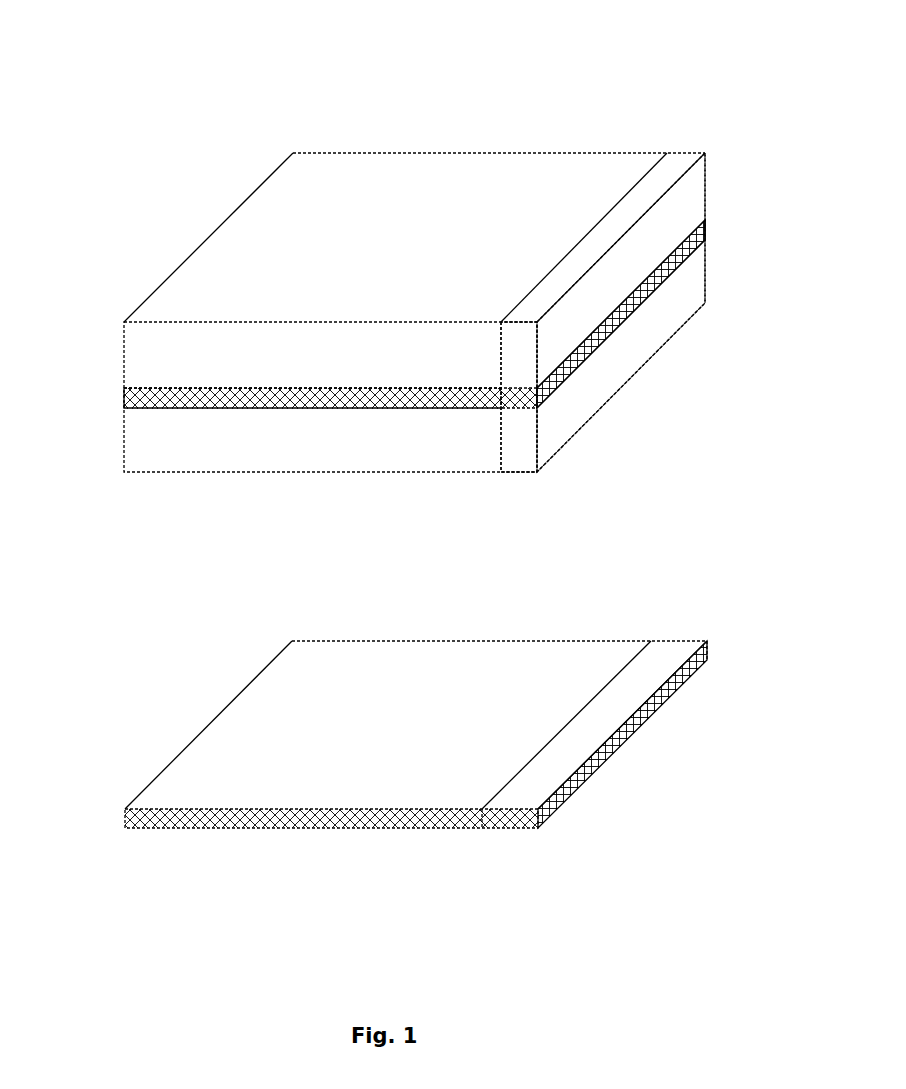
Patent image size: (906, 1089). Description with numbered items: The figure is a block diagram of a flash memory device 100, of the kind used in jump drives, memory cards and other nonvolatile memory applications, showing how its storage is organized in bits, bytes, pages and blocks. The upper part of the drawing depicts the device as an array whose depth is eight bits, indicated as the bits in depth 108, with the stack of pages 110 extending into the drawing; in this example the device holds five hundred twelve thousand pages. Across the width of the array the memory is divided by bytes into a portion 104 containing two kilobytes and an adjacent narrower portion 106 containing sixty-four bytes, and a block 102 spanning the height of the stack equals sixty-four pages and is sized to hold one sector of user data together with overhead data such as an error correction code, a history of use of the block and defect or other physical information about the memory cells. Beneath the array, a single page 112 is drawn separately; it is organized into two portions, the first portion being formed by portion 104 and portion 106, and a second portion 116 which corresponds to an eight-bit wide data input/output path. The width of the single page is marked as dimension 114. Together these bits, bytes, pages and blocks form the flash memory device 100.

The flash memory device 100 is at (422, 294).
The block 102 is at (106, 322).
The portion containing 2K bytes 104 is at (497, 483).
The portion containing 64 bytes 106 is at (518, 482).
The 8-bits in depth 108 is at (663, 364).
The pages 110 is at (709, 224).
The single page 112 is at (374, 770).
The interlayer width 114 is at (540, 847).
The second portion 116 is at (712, 673).